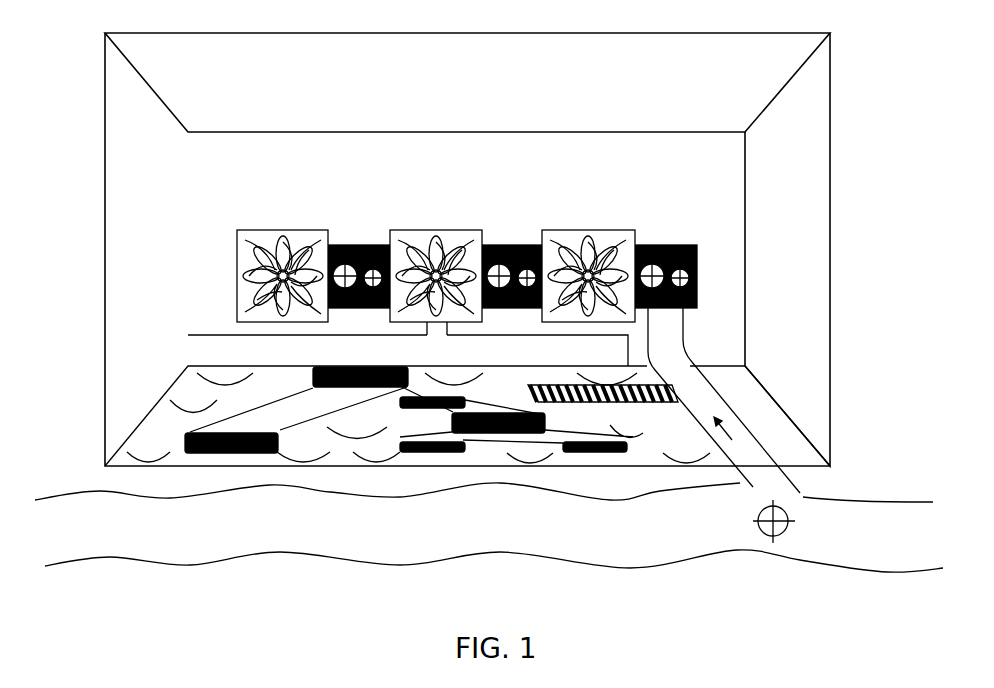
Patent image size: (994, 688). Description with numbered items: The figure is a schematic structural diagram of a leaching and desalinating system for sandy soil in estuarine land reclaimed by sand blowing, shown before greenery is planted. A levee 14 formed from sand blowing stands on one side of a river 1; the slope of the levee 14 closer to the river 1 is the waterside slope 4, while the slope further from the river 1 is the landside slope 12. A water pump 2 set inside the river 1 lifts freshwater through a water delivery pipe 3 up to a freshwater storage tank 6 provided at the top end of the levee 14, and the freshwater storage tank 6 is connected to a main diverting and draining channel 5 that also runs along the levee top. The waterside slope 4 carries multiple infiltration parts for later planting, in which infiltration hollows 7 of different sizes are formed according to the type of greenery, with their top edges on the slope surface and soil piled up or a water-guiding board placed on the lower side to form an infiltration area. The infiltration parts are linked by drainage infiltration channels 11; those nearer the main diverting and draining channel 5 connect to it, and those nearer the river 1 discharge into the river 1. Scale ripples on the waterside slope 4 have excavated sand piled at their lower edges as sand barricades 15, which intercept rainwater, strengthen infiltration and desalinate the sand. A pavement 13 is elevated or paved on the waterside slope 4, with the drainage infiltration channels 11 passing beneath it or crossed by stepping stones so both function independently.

The river 1 is at (512, 524).
The water pump 2 is at (785, 512).
The water delivery pipe 3 is at (752, 458).
The waterside slope 4 is at (165, 430).
The main diverting and draining channel 5 is at (207, 357).
The freshwater storage tank 6 is at (237, 252).
The infiltration hollow 7 is at (243, 453).
The drainage infiltration channel 11 is at (315, 406).
The landside slope 12 is at (200, 75).
The pavement 13 is at (678, 397).
The levee 14 is at (808, 148).
The sand barricade 15 is at (643, 432).